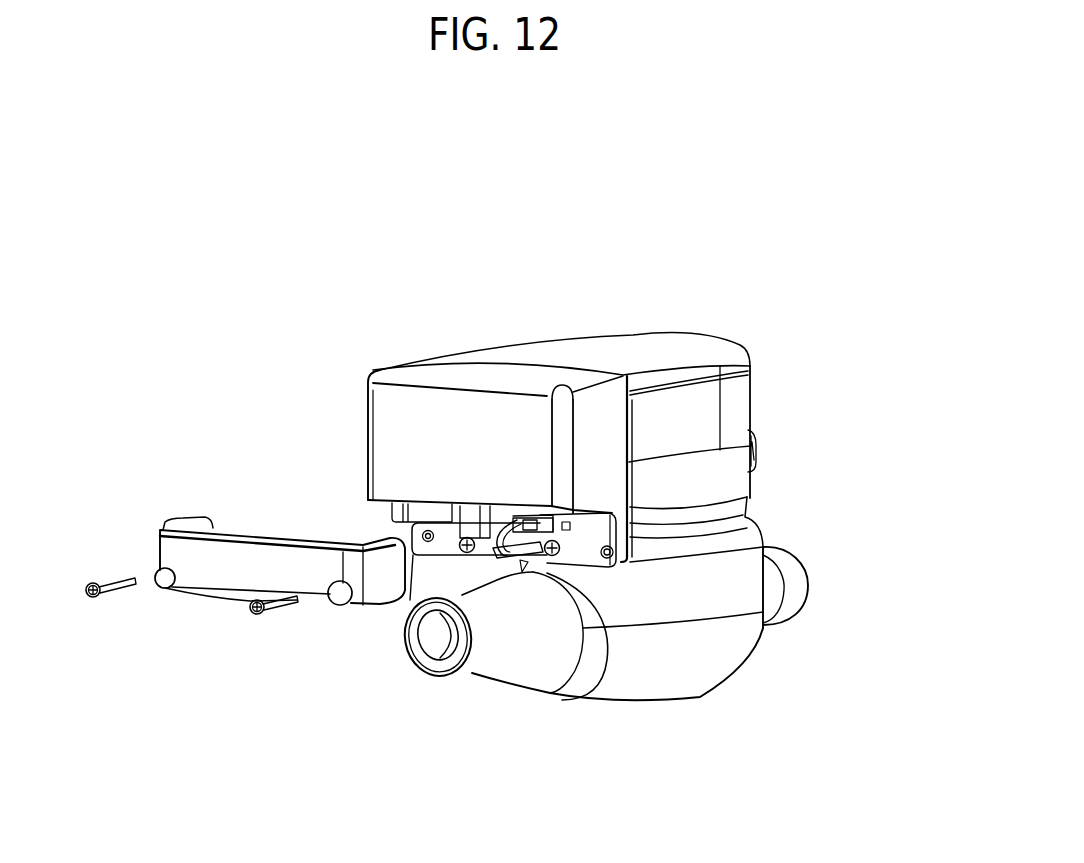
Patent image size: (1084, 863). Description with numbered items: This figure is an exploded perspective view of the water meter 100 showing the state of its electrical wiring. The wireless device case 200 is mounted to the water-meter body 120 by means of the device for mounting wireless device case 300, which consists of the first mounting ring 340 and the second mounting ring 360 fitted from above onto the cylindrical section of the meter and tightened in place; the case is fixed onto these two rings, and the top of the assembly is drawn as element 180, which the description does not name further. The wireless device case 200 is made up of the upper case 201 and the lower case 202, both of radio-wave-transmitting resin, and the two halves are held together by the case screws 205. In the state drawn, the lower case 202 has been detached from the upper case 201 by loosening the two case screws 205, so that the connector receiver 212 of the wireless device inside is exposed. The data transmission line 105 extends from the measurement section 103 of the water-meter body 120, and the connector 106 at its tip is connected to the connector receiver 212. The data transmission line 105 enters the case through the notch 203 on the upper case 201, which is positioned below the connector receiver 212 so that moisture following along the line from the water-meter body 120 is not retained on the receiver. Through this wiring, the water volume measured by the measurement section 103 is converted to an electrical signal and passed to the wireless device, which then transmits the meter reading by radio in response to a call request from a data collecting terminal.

The water meter 100 is at (475, 308).
The measurement section 103 is at (740, 580).
The data transmission line 105 is at (495, 553).
The connector 106 is at (538, 550).
The water-meter body 120 is at (717, 677).
The top cover 180 is at (637, 350).
The wireless device case 200 is at (345, 398).
The upper case 201 is at (410, 367).
The lower case 202 is at (160, 527).
The notch 203 is at (535, 553).
The case screw 205 is at (273, 603).
The connector receiver 212 is at (550, 522).
The device for mounting wireless device case 300 is at (843, 365).
The first mounting ring 340 is at (733, 485).
The second mounting ring 360 is at (735, 405).